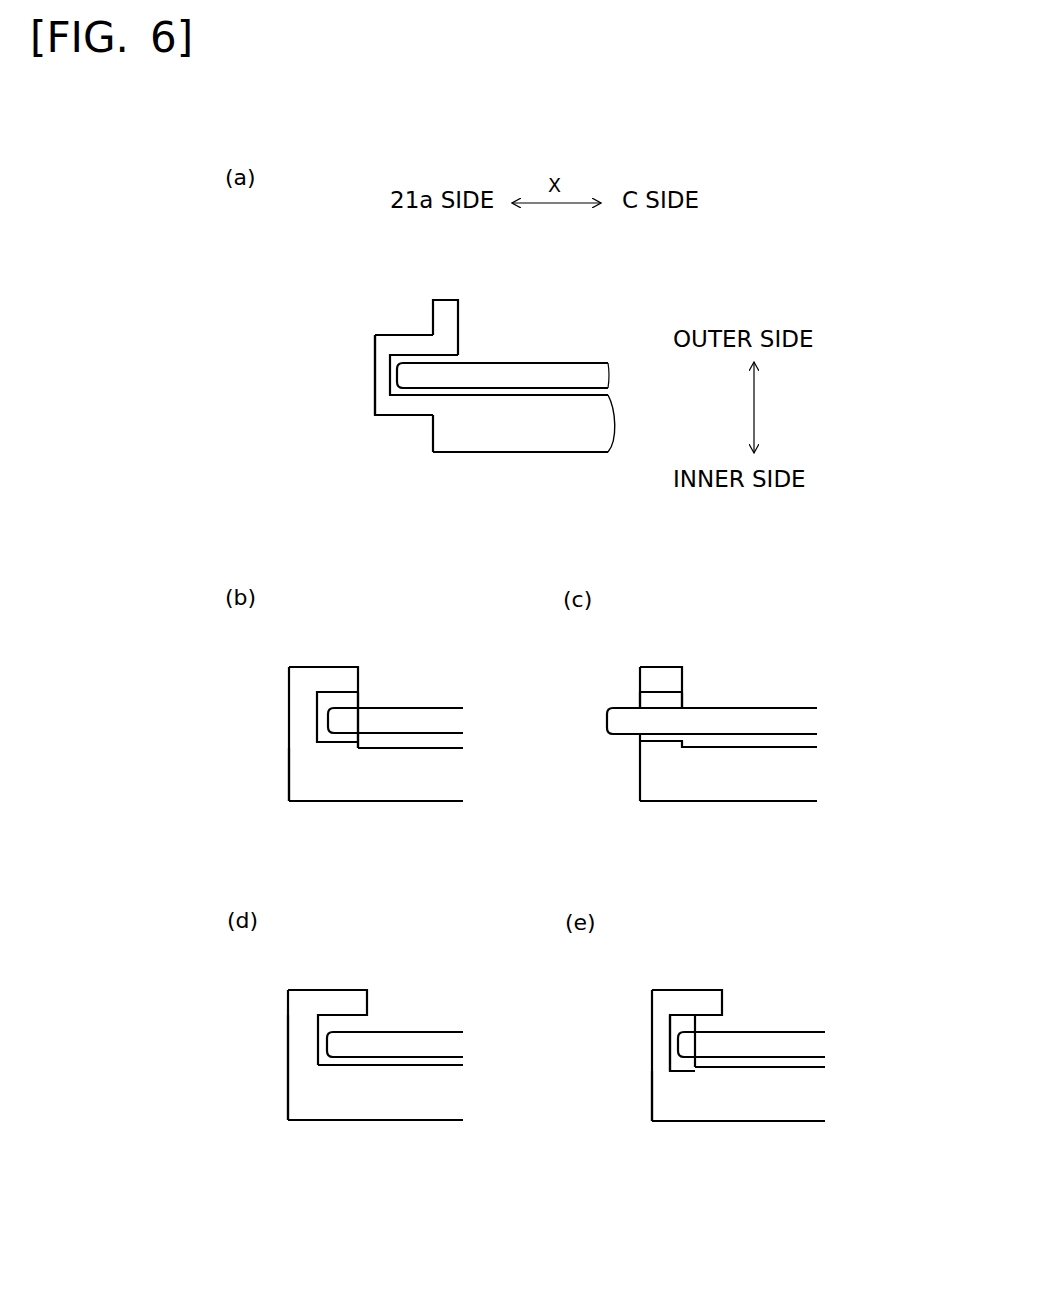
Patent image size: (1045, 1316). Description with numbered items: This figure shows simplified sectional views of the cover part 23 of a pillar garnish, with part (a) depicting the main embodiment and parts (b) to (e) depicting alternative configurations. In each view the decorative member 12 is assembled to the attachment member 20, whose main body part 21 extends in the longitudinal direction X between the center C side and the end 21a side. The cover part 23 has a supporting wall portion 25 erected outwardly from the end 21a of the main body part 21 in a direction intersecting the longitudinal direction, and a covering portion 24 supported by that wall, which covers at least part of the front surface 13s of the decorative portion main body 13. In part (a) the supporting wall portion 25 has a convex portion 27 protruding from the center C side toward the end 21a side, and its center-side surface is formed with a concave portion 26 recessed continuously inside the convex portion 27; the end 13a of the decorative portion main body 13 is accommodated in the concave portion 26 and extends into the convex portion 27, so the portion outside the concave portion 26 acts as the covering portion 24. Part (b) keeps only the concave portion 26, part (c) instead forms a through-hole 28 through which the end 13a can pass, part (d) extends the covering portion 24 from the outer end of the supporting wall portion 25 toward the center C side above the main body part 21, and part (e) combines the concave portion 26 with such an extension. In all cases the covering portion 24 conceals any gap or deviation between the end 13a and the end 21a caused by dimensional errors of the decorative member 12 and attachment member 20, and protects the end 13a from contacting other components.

The decorative member 12 is at (667, 287).
The decorative portion main body 13 is at (548, 362).
The end of the decorative portion main body 13a is at (450, 380).
The front surface of the decorative portion main body 13s is at (580, 362).
The attachment member 20 is at (538, 464).
The main body part 21 is at (577, 436).
The end of the main body part 21a is at (443, 440).
The cover part 23 is at (344, 308).
The covering portion 24 is at (400, 334).
The supporting wall portion 25 is at (460, 355).
The concave portion 26 is at (408, 400).
The convex portion 27 is at (368, 409).
The through-hole 28 is at (640, 707).